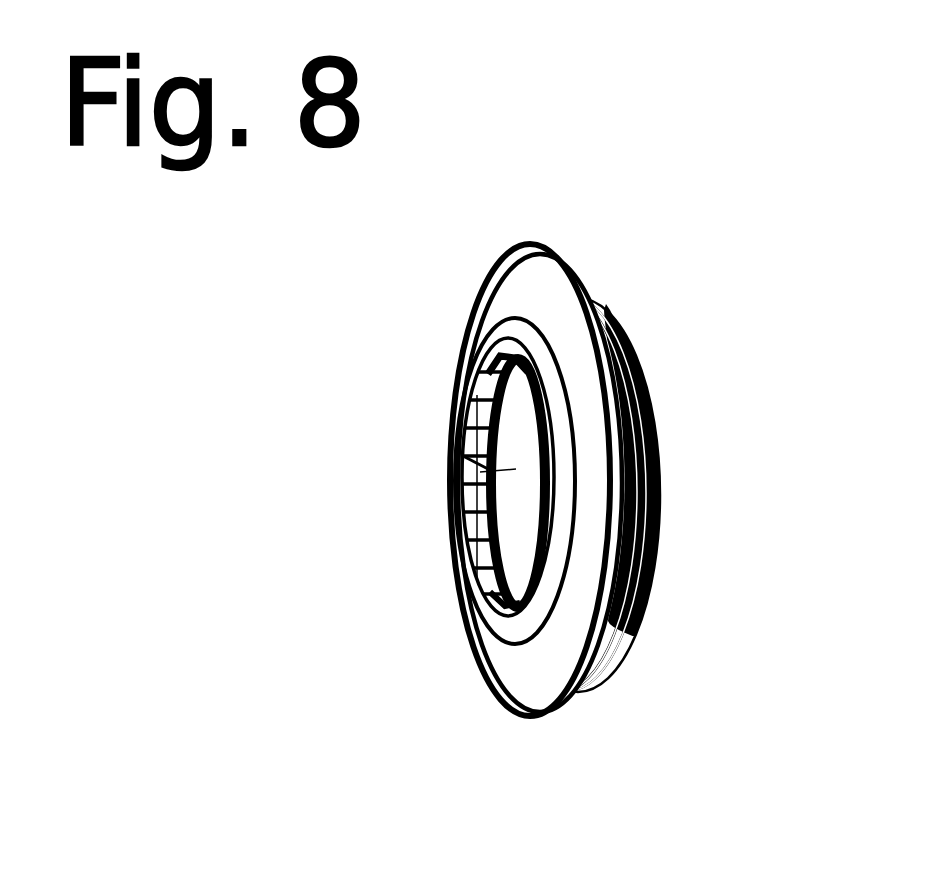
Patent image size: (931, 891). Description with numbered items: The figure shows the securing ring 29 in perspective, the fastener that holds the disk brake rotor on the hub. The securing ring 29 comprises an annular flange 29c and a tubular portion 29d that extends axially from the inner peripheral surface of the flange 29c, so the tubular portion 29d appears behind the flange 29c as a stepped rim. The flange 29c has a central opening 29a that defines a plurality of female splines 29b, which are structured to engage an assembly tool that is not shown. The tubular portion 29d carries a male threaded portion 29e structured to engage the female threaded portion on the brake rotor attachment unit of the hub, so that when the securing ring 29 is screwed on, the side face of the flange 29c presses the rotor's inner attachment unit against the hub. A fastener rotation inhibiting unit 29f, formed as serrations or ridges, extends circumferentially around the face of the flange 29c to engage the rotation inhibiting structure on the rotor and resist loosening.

The securing ring 29 is at (704, 184).
The central opening 29a is at (455, 446).
The female splines 29b is at (455, 490).
The annular flange 29c is at (600, 680).
The tubular portion 29d is at (657, 498).
The male threaded portion 29e is at (651, 388).
The fastener rotation inhibiting unit 29f is at (603, 288).